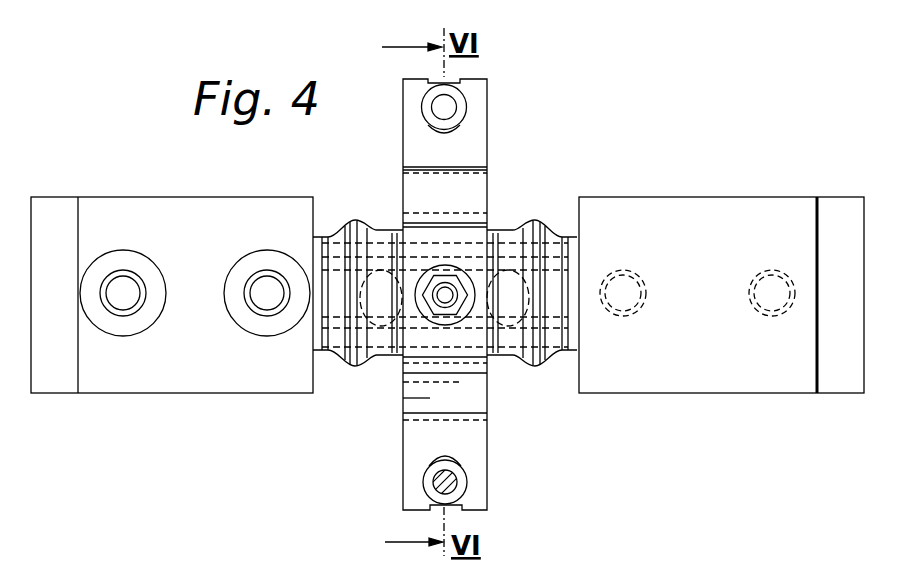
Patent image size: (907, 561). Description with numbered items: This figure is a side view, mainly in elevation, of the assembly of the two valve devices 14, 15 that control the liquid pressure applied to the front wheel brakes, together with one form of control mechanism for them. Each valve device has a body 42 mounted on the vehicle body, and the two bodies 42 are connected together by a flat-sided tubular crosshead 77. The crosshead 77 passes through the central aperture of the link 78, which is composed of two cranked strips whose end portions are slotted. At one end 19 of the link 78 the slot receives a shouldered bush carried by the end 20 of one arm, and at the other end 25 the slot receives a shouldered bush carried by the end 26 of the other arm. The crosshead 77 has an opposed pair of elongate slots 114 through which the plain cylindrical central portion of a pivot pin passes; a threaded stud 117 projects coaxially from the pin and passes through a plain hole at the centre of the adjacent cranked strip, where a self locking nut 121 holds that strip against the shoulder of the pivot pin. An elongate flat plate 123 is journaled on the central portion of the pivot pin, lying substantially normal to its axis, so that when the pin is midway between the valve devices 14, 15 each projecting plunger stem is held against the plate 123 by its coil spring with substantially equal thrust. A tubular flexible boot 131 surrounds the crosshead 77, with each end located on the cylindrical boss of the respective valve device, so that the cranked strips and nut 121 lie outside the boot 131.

The valve device 14 is at (729, 224).
The valve device 15 is at (189, 226).
The end of the link 19 is at (472, 88).
The end of the arm 20 is at (452, 112).
The other end of the link 25 is at (418, 490).
The end of the arm 26 is at (455, 487).
The body 42 is at (112, 213).
The tubular crosshead 77 is at (468, 213).
The link 78 is at (458, 151).
The elongate slots 114 is at (420, 320).
The threaded stud 117 is at (450, 290).
The self locking nut 121 is at (432, 283).
The elongate flat plate 123 is at (560, 278).
The flexible boot 131 is at (560, 352).